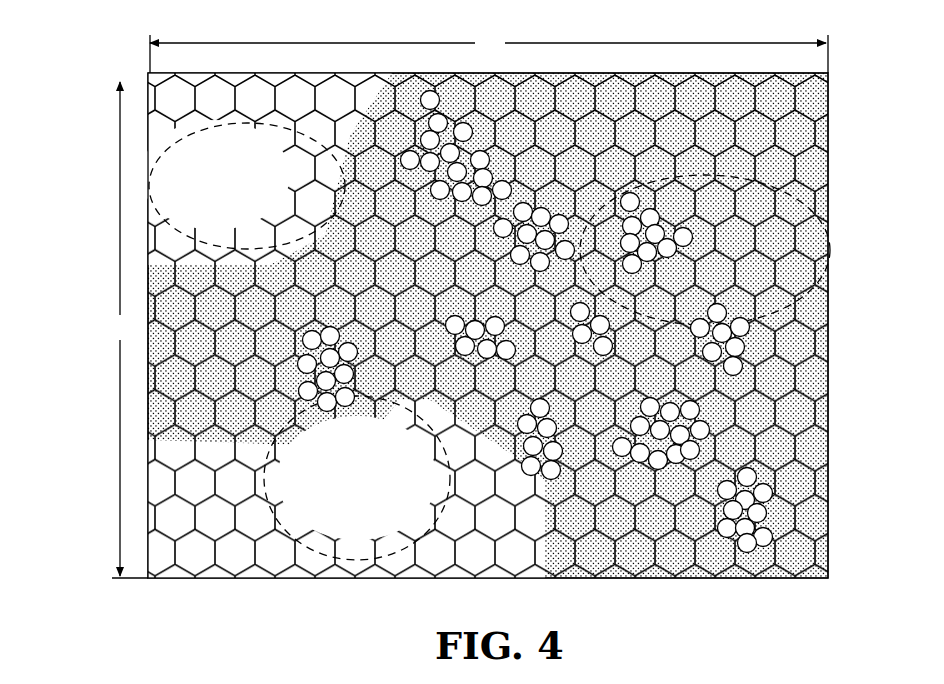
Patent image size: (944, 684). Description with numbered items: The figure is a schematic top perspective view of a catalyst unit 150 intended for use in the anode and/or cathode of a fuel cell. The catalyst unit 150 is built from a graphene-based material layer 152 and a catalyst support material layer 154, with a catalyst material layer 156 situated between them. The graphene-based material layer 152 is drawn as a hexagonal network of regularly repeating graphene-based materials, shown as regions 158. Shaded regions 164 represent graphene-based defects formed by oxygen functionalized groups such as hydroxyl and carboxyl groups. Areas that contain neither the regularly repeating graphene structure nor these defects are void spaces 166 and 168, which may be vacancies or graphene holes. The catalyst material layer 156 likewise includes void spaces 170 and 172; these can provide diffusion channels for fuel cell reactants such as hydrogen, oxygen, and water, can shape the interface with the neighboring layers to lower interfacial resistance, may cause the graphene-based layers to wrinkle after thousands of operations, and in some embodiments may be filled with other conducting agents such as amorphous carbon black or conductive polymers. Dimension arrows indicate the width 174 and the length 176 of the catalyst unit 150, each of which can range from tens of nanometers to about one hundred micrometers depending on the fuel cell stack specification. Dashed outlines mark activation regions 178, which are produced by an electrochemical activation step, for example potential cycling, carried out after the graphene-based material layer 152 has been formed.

The catalyst unit 150 is at (85, 548).
The graphene-based material layer 152 is at (198, 75).
The catalyst support material layer 154 is at (585, 100).
The catalyst material layer 156 is at (450, 110).
The regions 158 is at (168, 282).
The regions 164 is at (755, 562).
The void spaces 166 is at (216, 535).
The void spaces 168 is at (372, 75).
The void spaces 170 is at (677, 90).
The void spaces 172 is at (672, 558).
The width 174 is at (545, 43).
The length 176 is at (118, 410).
The activation regions 178 is at (531, 75).